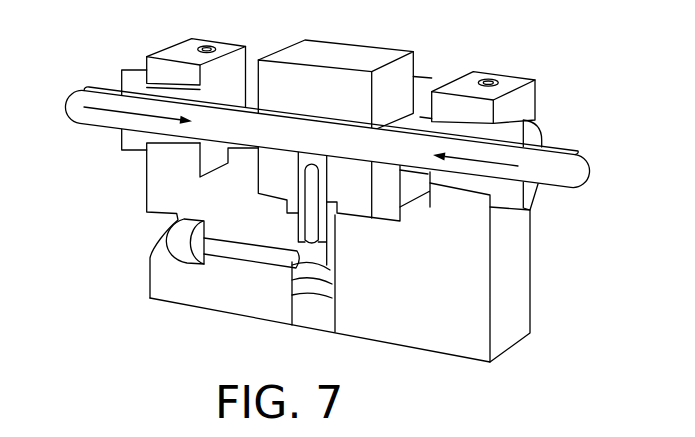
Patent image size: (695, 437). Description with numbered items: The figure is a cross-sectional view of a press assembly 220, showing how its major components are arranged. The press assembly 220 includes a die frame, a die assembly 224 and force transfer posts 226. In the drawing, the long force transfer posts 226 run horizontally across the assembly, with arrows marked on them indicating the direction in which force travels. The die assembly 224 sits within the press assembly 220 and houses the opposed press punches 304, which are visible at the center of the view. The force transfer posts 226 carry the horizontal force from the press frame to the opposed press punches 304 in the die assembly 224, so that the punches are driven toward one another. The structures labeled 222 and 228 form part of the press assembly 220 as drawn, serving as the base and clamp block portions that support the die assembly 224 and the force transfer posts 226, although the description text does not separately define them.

The press assembly 220 is at (598, 212).
The base 222 is at (512, 332).
The die assembly 224 is at (268, 162).
The force transfer posts 226 is at (87, 88).
The clamp block 228 is at (417, 77).
The press punches 304 is at (285, 130).